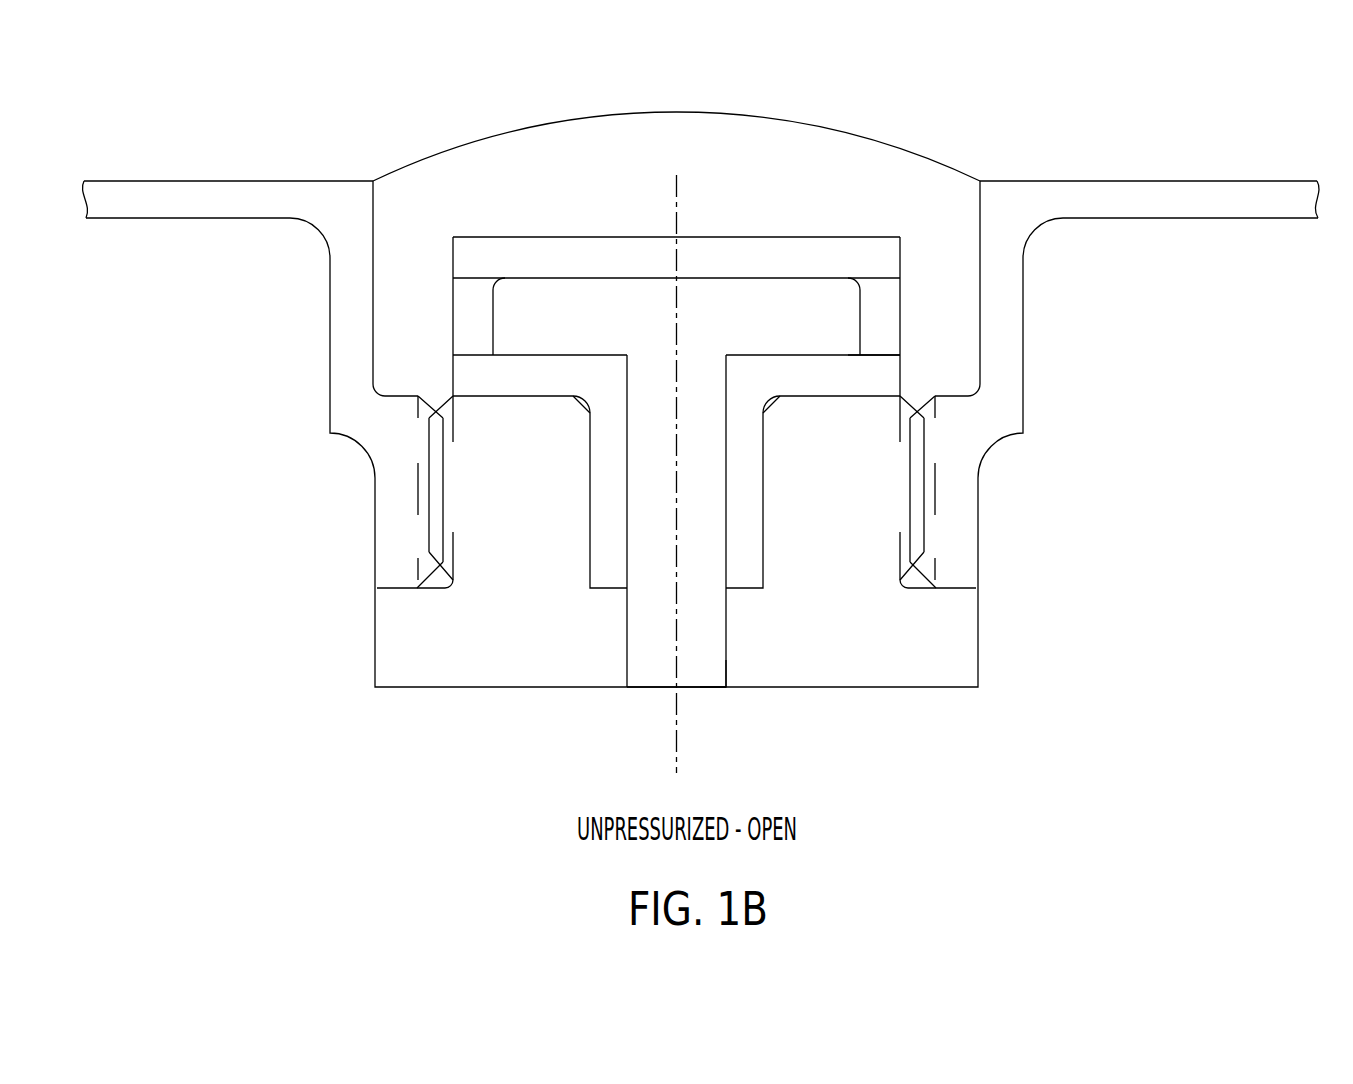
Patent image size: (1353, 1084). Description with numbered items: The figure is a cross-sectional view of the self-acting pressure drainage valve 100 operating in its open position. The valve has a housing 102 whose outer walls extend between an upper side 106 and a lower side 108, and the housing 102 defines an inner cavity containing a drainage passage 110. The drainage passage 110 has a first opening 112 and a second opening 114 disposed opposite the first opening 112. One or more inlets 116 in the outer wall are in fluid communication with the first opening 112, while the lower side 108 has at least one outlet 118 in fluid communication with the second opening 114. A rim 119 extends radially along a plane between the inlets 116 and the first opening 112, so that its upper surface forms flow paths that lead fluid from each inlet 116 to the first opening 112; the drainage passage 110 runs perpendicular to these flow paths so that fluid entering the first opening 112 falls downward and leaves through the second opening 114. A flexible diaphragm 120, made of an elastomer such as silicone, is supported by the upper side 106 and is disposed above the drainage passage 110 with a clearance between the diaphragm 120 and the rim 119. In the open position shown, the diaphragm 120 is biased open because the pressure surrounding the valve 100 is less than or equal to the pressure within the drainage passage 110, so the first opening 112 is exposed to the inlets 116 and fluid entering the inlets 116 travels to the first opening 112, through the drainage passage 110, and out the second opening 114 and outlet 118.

The self-acting pressure drainage valve 100 is at (218, 140).
The housing 102 is at (786, 405).
The upper side 106 is at (888, 293).
The lower side 108 is at (406, 690).
The drainage passage 110 is at (708, 540).
The first opening 112 is at (653, 395).
The second opening 114 is at (657, 672).
The inlets 116 is at (510, 340).
The outlet 118 is at (734, 700).
The rim 119 is at (866, 352).
The flexible diaphragm 120 is at (765, 250).